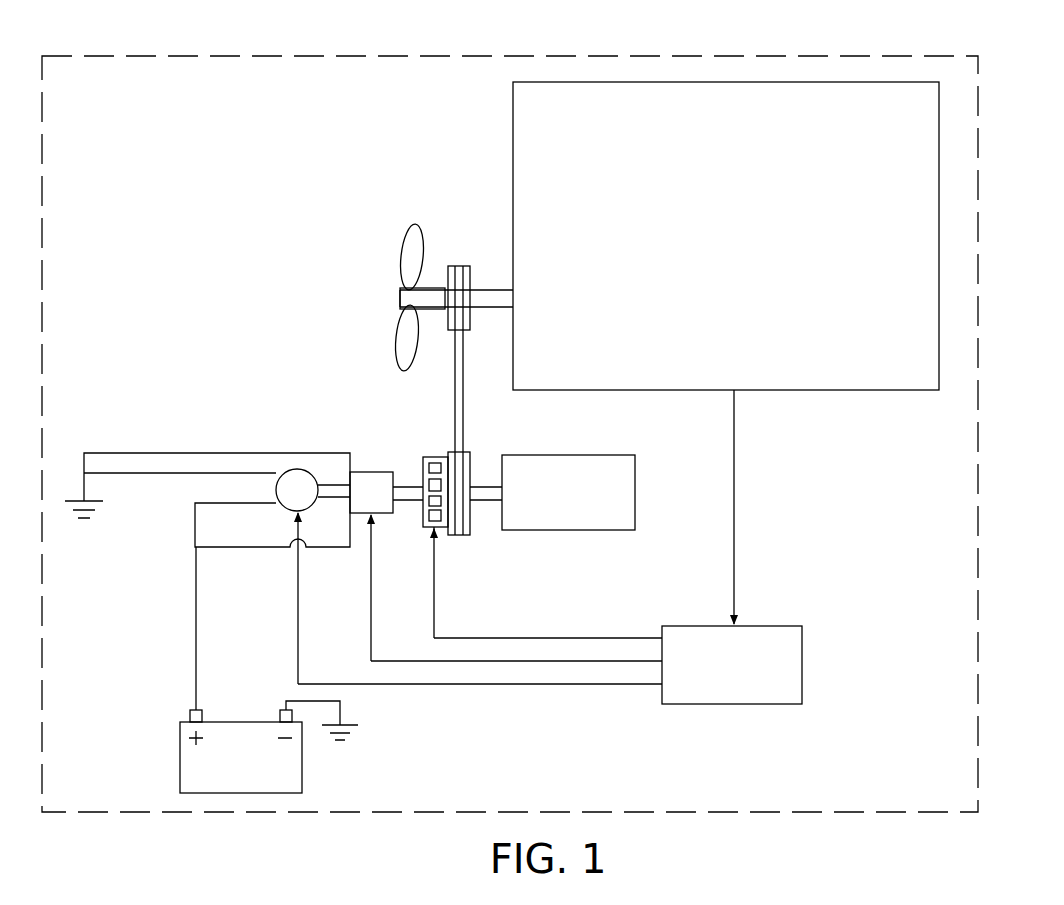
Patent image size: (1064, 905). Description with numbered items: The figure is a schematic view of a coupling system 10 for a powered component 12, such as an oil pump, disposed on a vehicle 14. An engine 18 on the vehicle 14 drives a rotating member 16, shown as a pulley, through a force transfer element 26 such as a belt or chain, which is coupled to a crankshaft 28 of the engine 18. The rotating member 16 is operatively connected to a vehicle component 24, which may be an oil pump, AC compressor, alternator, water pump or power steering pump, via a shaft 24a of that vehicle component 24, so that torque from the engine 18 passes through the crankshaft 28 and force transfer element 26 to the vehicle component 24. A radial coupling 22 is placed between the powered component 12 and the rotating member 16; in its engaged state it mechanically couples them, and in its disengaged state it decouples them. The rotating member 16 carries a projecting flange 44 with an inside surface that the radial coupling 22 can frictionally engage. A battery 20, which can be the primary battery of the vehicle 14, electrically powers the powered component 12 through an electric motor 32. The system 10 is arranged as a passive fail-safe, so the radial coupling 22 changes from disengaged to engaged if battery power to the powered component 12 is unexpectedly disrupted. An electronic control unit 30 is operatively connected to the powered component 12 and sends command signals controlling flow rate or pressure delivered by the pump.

The coupling system 10 is at (412, 778).
The powered component 12 is at (362, 472).
The vehicle 14 is at (977, 470).
The rotating member 16 is at (473, 531).
The engine 18 is at (824, 373).
The battery 20 is at (185, 768).
The radial coupling 22 is at (427, 455).
The vehicle component 24 is at (610, 520).
The shaft 24a is at (490, 460).
The force transfer element 26 is at (462, 387).
The crankshaft 28 is at (432, 293).
The electronic control unit 30 is at (743, 693).
The electric motor 32 is at (292, 470).
The flange 44 is at (427, 530).